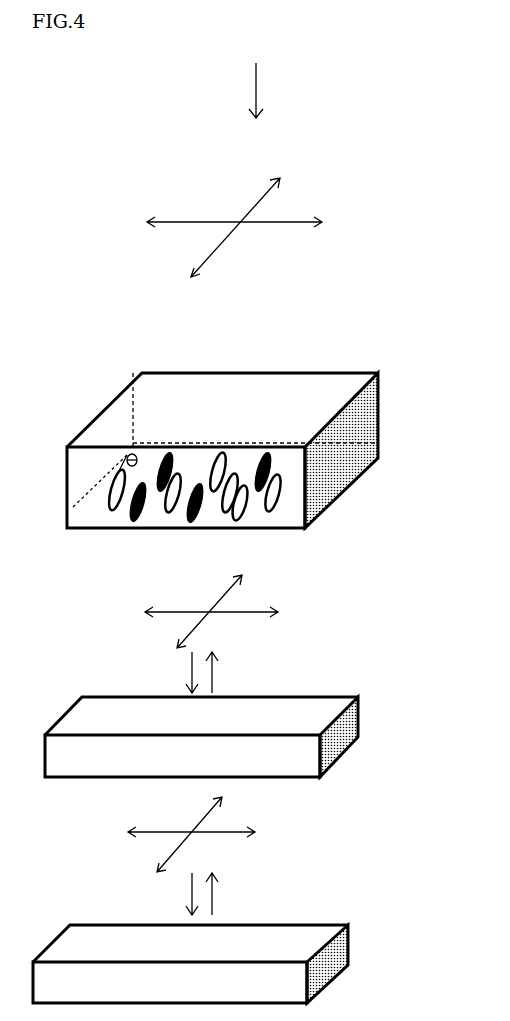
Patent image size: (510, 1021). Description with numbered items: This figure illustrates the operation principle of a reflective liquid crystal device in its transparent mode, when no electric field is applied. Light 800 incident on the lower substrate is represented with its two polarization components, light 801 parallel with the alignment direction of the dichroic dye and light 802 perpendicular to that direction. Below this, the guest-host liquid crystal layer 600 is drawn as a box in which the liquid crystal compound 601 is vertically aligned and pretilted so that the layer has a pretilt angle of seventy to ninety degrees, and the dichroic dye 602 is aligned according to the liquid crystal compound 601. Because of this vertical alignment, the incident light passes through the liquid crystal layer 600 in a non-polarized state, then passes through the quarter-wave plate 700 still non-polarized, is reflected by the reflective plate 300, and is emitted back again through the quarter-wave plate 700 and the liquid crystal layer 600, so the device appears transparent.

The light incident on a lower substrate 800 is at (291, 216).
The light parallel with an alignment direction of a dichroic dye 801 is at (257, 197).
The light perpendicular to an alignment direction of a dichroic dye 802 is at (290, 223).
The guest-host liquid crystal layer 600 is at (264, 471).
The liquid crystal compound 601 is at (248, 508).
The dichroic dye 602 is at (130, 520).
The quarter-wave plate 700 is at (355, 742).
The reflective plate 300 is at (335, 970).